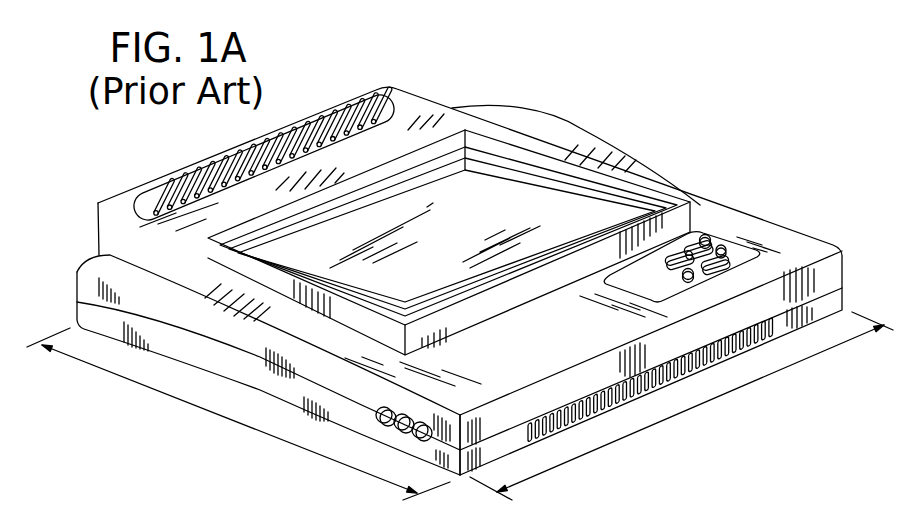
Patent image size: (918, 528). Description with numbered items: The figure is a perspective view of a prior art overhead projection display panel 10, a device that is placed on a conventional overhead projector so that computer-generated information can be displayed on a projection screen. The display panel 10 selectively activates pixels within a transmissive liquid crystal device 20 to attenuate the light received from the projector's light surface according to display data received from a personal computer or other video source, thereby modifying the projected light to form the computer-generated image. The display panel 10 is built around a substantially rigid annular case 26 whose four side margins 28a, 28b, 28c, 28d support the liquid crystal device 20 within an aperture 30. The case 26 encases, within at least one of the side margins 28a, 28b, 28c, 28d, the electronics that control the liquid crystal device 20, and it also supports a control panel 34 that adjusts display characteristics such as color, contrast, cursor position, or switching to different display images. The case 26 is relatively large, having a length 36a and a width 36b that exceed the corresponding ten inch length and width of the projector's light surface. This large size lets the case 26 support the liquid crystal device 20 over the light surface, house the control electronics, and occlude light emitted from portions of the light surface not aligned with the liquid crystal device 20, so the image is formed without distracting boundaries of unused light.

The overhead projection display panel 10 is at (436, 92).
The transmissive liquid crystal device 20 is at (437, 233).
The annular case 26 is at (800, 243).
The side margin 28a is at (586, 144).
The side margin 28b is at (590, 338).
The side margin 28c is at (200, 284).
The side margin 28d is at (243, 207).
The aperture 30 is at (540, 160).
The control panel 34 is at (723, 234).
The length 36a is at (242, 425).
The width 36b is at (722, 395).